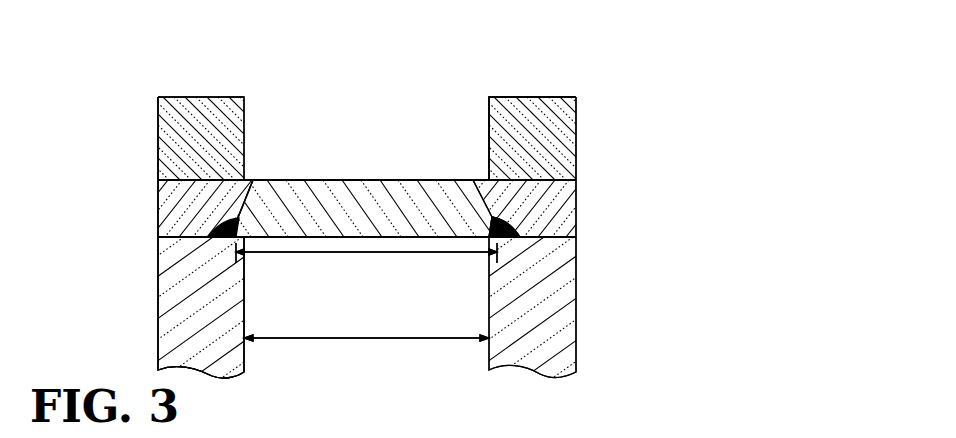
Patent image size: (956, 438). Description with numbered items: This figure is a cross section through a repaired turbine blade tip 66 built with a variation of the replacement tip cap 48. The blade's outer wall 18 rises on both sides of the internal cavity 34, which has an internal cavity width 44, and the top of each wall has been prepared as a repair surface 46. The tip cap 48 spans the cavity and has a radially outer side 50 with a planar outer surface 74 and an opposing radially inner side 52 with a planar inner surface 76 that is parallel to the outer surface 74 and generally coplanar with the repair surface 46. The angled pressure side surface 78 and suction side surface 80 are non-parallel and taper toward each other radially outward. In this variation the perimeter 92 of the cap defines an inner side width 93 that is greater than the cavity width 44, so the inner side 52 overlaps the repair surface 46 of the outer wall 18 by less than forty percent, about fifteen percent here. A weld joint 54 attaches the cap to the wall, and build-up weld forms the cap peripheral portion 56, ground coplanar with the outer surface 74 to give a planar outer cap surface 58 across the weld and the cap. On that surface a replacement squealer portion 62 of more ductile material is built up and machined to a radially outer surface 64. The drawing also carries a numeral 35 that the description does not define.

The replacement blade tip 66 is at (146, 117).
The cap peripheral portion 56 is at (177, 208).
The outer wall 18 is at (185, 314).
The pressure side surface 78 is at (250, 180).
The planar outer surface 74 is at (345, 179).
The replacement tip cap 48 is at (365, 180).
The radially outer side 50 is at (410, 179).
The suction side surface 80 is at (477, 179).
The outer cap surface 58 is at (484, 179).
The radially outer surface 64 is at (545, 96).
The replacement squealer portion 62 is at (577, 125).
The weld joint 54 is at (510, 214).
The repair surface 46 is at (577, 224).
The perimeter 92 is at (505, 240).
The inner side width 93 is at (366, 252).
The cavity 35 is at (366, 264).
The planar inner surface 76 is at (322, 238).
The internal cavity 34 is at (376, 305).
The radially inner side 52 is at (437, 238).
The internal cavity width 44 is at (366, 338).